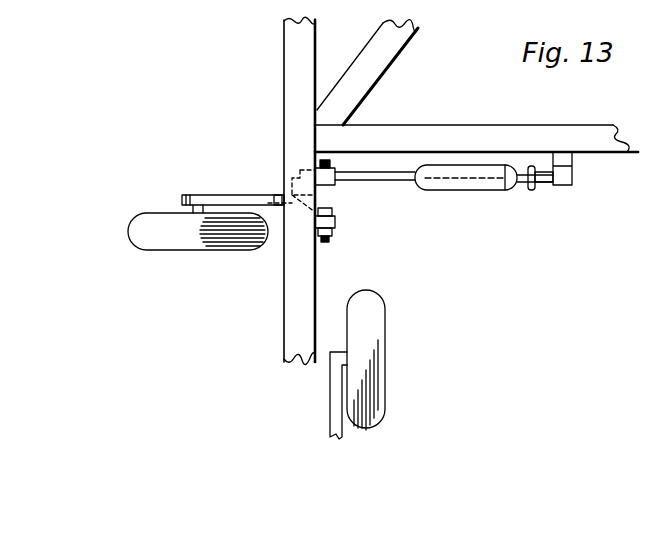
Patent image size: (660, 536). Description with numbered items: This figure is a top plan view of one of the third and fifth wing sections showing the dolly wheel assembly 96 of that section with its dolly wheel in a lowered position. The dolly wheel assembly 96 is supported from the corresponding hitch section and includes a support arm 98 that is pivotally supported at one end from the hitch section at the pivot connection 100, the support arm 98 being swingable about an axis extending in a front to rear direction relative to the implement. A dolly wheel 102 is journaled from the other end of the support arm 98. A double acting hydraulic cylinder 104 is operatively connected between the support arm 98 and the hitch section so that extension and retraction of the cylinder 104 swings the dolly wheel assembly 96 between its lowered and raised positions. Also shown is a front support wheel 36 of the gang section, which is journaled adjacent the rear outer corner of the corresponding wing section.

The front support wheel 36 is at (368, 373).
The dolly wheel assembly 96 is at (247, 193).
The support arm 98 is at (276, 206).
The pivot connection 100 is at (327, 212).
The dolly wheel 102 is at (184, 238).
The double acting hydraulic cylinder 104 is at (467, 190).